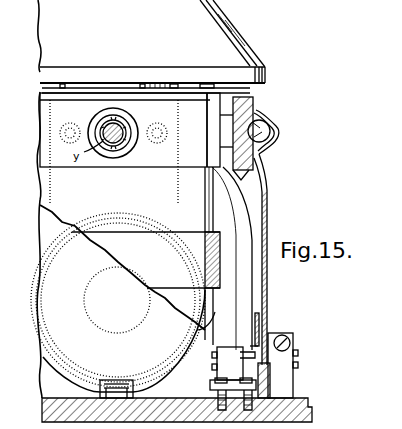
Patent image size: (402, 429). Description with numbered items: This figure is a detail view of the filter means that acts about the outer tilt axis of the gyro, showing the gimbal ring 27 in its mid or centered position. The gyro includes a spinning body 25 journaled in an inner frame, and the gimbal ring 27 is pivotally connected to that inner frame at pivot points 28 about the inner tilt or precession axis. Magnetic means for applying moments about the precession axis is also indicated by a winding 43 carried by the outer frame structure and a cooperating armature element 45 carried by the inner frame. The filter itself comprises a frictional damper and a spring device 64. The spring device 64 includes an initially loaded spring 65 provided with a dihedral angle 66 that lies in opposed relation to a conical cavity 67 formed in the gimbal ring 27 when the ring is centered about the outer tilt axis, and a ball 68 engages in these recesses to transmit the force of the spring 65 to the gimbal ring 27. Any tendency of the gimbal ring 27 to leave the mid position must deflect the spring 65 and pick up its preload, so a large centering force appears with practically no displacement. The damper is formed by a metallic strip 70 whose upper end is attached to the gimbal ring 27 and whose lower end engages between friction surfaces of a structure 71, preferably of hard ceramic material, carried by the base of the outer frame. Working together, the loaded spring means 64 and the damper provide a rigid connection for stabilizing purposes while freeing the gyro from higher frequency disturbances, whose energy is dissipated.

The spinning body 25 is at (256, 60).
The gimbal ring 27 is at (250, 100).
The pivotal connection 28 is at (130, 149).
The winding 43 is at (42, 375).
The armature element 45 is at (70, 337).
The spring device 64 is at (300, 295).
The spring 65 is at (268, 194).
The dihedral angle 66 is at (270, 123).
The conical cavity 67 is at (252, 138).
The ball 68 is at (265, 143).
The metallic strip 70 is at (256, 318).
The friction structure 71 is at (246, 352).